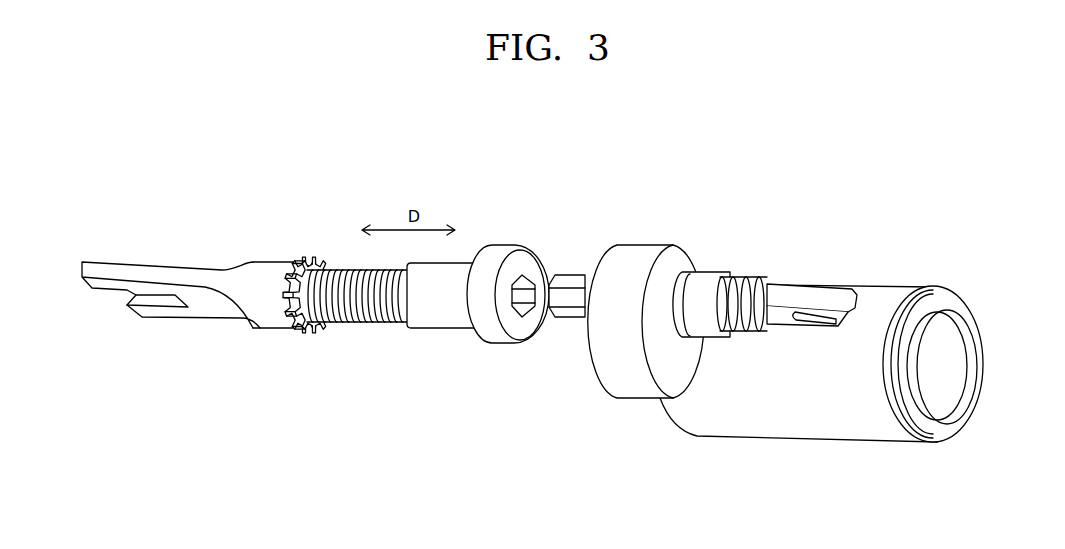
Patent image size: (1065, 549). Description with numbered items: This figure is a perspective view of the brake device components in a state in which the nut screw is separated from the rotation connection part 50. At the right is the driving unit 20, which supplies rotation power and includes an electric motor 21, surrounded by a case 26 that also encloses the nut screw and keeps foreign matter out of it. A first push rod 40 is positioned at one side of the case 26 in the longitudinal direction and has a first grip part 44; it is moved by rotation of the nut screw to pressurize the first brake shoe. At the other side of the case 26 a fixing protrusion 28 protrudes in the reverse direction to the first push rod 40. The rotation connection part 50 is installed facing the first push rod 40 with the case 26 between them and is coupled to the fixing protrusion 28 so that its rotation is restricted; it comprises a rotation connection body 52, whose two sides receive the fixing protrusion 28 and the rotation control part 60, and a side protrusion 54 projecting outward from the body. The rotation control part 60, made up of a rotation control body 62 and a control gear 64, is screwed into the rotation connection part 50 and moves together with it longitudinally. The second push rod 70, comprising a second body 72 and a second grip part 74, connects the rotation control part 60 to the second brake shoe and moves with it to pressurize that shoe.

The driving unit 20 is at (813, 348).
The electric motor 21 is at (950, 340).
The case 26 is at (833, 427).
The fixing protrusion 28 is at (567, 293).
The first push rod 40 is at (787, 271).
The first grip part 44 is at (813, 297).
The rotation connection part 50 is at (478, 346).
The rotation connection body 52 is at (435, 317).
The side protrusion 54 is at (508, 331).
The rotation control part 60 is at (340, 344).
The rotation control body 62 is at (357, 334).
The control gear 64 is at (300, 333).
The second push rod 70 is at (187, 346).
The second body 72 is at (258, 311).
The second grip part 74 is at (162, 310).